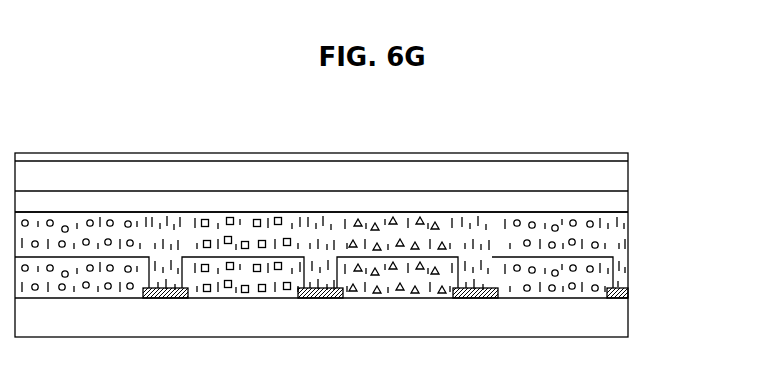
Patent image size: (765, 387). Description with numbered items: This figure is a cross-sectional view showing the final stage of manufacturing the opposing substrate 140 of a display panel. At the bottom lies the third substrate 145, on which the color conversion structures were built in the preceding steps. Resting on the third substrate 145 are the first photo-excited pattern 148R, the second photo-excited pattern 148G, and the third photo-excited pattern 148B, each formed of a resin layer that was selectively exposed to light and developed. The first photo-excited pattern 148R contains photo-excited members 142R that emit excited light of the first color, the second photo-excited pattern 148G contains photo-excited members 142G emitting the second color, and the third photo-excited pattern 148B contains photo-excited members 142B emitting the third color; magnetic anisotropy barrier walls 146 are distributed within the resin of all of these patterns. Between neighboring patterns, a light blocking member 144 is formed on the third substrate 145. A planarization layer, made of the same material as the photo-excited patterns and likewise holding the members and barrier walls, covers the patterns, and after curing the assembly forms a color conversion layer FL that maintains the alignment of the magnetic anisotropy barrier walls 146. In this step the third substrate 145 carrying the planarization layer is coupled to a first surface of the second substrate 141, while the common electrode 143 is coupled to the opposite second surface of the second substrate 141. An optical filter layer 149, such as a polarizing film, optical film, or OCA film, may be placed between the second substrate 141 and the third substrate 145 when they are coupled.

The opposing substrate 140 is at (685, 153).
The common electrode 143 is at (615, 157).
The second substrate 141 is at (612, 180).
The optical filter layer 149 is at (612, 205).
The functional layer FL is at (612, 250).
The third substrate 145 is at (612, 321).
The first photo-excited pattern 148R is at (78, 262).
The second photo-excited pattern 148G is at (242, 265).
The third photo-excited pattern 148B is at (400, 265).
The photo-excited members 142R is at (62, 290).
The photo-excited members 142G is at (243, 292).
The photo-excited members 142B is at (397, 292).
The light blocking member 144 is at (163, 298).
The magnetic anisotropy barrier walls 146 is at (88, 288).